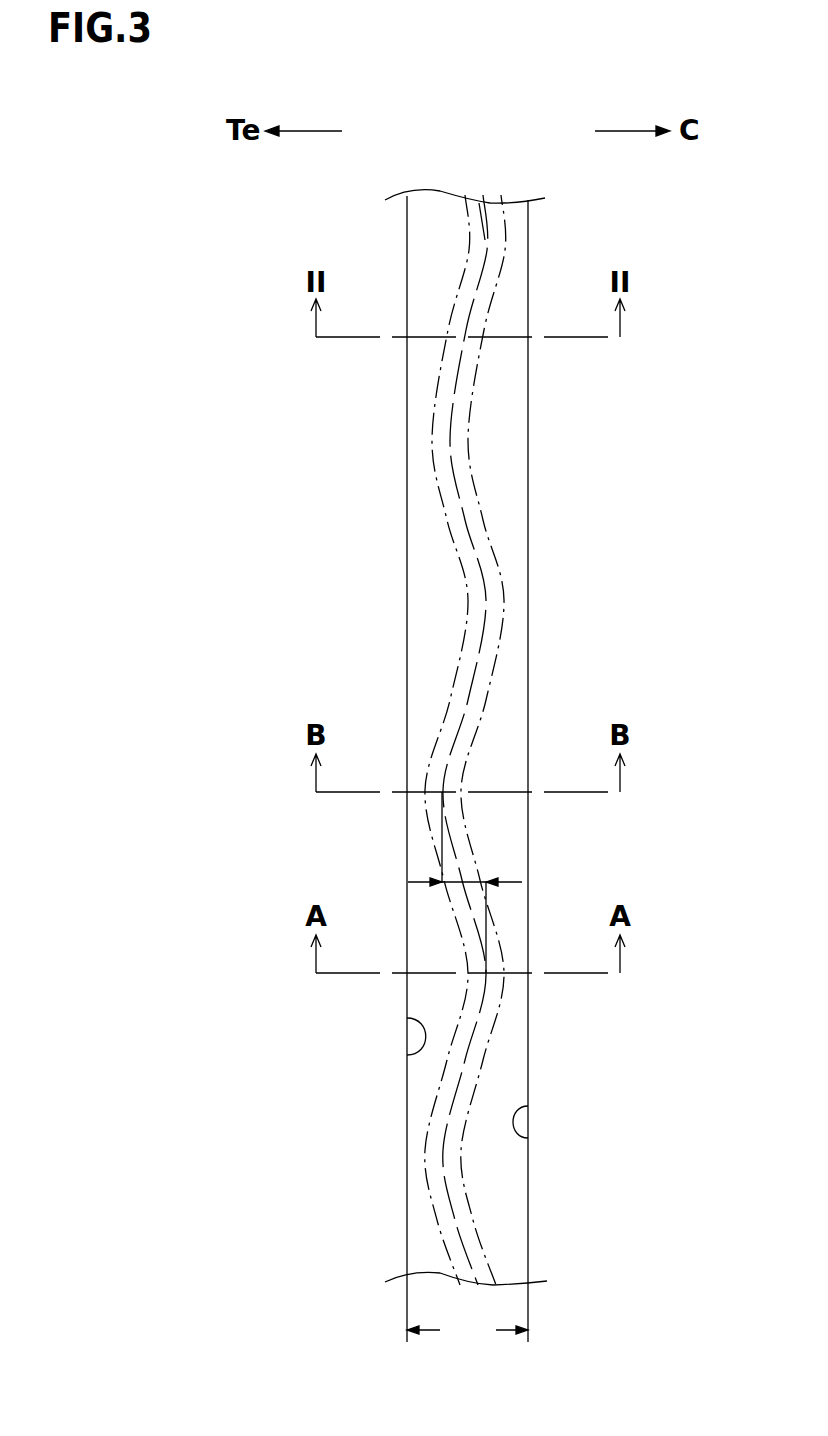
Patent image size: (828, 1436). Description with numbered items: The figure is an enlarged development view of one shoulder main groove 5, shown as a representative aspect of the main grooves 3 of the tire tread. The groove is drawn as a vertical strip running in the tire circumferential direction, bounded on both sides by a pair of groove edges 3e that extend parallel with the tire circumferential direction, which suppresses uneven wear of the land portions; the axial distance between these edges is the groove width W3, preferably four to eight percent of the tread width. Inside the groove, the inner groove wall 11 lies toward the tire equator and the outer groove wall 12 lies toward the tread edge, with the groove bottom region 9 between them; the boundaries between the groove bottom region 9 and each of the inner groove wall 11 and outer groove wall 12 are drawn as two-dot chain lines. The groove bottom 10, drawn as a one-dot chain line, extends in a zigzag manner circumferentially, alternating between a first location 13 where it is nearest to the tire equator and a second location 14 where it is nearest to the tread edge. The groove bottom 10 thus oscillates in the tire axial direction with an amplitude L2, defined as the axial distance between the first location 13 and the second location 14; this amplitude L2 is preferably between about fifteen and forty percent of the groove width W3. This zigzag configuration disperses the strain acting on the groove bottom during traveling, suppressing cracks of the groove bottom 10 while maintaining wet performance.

The main groove 3 is at (477, 724).
The shoulder main groove 5 is at (477, 724).
The groove bottom region 9 is at (478, 740).
The groove bottom 10 is at (487, 236).
The inner groove wall 11 is at (493, 430).
The outer groove wall 12 is at (445, 607).
The first location 13 is at (485, 610).
The second location 14 is at (442, 425).
The groove edges 3e is at (407, 1047).
The amplitude L2 is at (475, 880).
The groove width W3 is at (467, 1314).